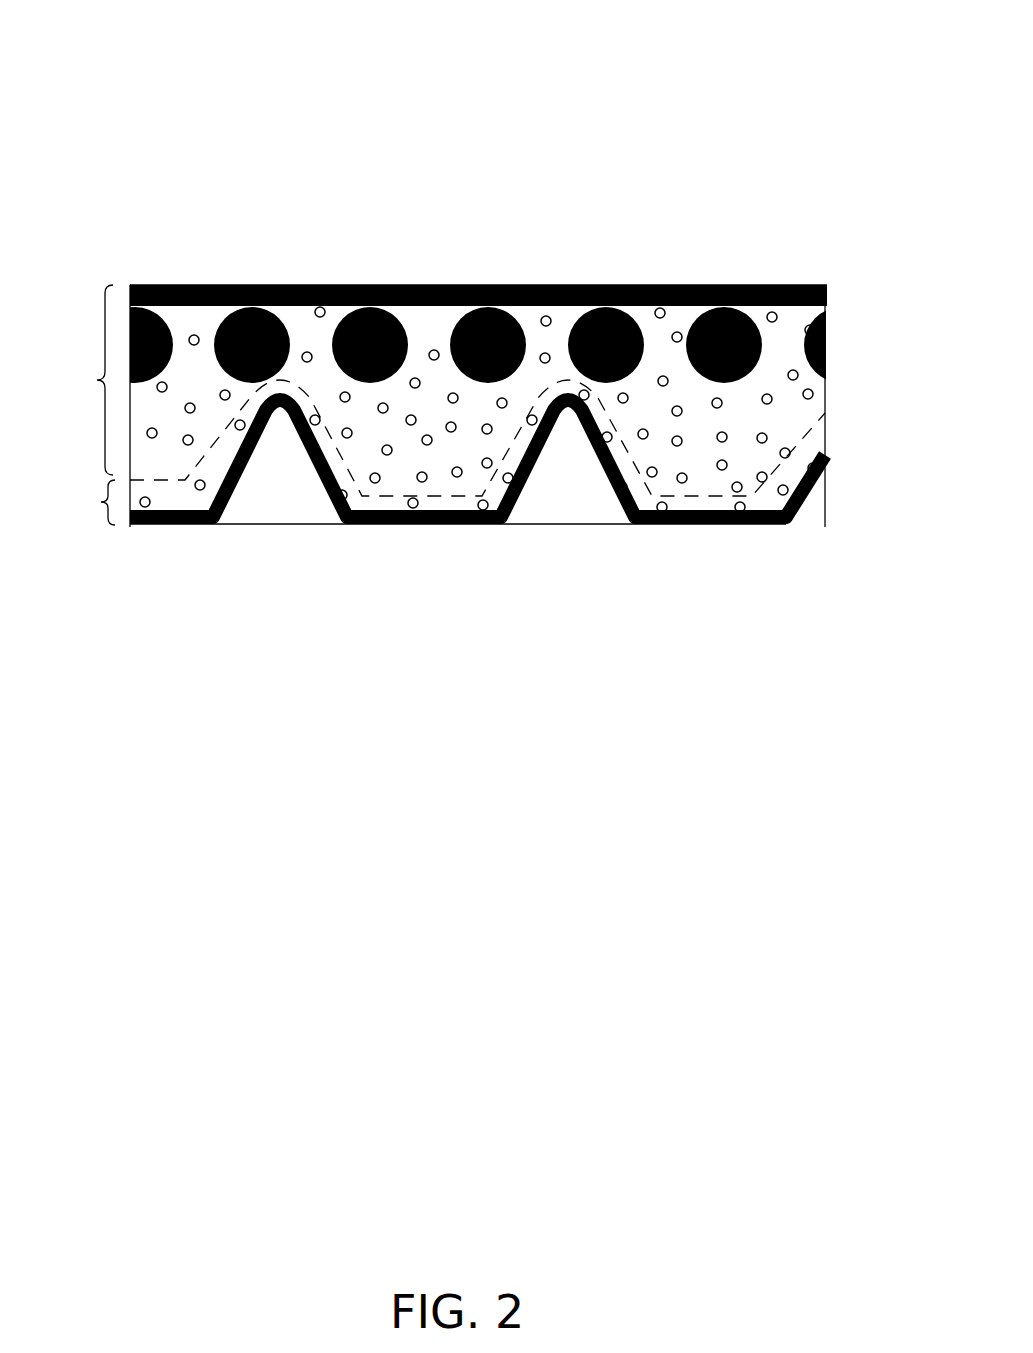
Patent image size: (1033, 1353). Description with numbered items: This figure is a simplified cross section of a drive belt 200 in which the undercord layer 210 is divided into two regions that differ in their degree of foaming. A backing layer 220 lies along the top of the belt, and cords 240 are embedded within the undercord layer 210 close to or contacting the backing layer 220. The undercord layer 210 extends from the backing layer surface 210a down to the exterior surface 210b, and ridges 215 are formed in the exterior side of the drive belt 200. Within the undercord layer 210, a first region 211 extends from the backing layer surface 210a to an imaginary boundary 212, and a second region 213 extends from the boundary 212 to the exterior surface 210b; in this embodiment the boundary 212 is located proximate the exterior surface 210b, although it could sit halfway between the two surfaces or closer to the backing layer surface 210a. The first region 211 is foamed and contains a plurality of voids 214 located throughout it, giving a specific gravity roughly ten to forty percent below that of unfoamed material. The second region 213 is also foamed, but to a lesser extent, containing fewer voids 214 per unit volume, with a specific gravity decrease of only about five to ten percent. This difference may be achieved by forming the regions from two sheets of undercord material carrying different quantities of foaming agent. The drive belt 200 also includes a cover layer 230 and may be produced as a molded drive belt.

The drive belt 200 is at (147, 63).
The undercord layer 210 is at (800, 320).
The backing layer surface 210a is at (708, 285).
The exterior surface 210b is at (738, 528).
The first region 211 is at (80, 380).
The boundary 212 is at (175, 480).
The second region 213 is at (85, 502).
The voids 214 is at (190, 403).
The ridges 215 is at (440, 473).
The backing layer 220 is at (828, 290).
The cover layer 230 is at (827, 492).
The cords 240 is at (762, 346).